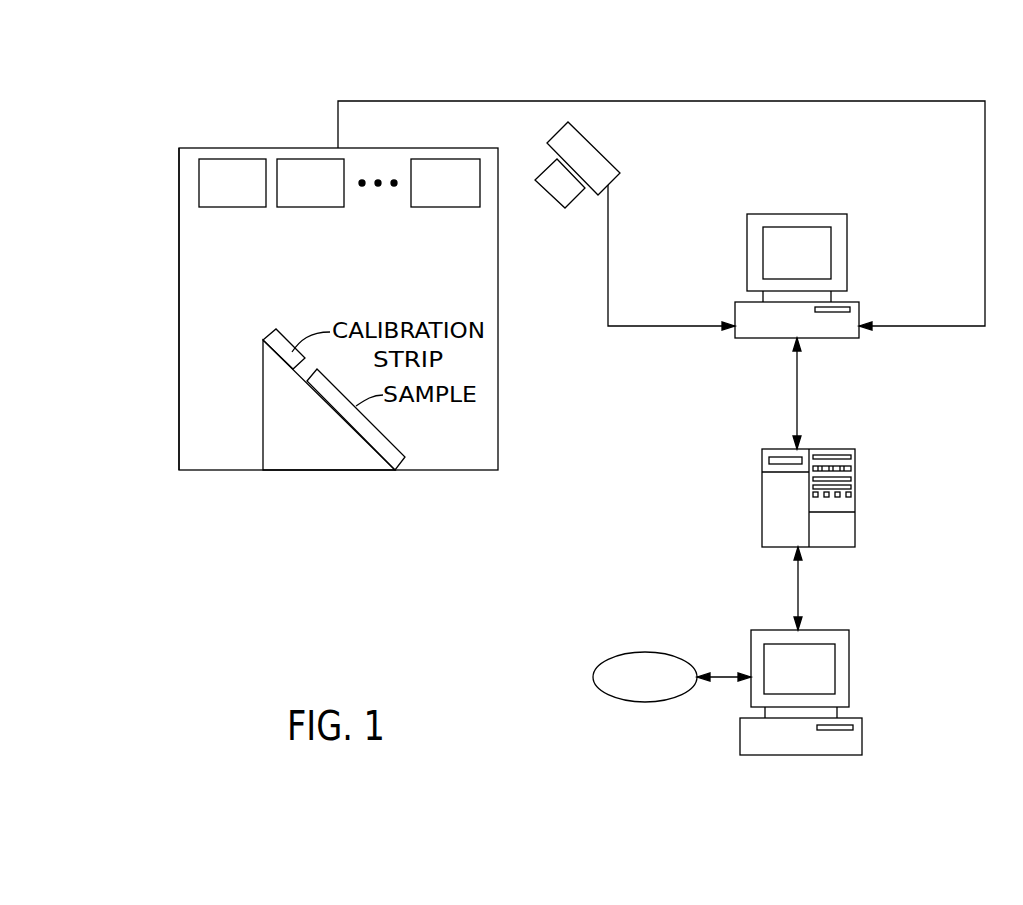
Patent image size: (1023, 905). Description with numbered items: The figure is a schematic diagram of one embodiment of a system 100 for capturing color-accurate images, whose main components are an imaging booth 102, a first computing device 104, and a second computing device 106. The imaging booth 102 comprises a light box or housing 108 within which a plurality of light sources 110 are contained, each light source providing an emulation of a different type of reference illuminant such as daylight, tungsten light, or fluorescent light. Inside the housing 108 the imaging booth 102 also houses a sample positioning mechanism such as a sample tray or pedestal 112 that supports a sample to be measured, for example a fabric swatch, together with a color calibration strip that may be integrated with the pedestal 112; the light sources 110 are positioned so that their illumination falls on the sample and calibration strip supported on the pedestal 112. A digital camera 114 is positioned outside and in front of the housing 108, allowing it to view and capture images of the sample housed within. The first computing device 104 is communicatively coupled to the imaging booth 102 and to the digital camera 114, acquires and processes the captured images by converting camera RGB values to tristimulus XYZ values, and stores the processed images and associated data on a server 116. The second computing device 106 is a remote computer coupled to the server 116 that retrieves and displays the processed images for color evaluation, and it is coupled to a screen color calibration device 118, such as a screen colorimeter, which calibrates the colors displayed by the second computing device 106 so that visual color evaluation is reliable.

The system 100 is at (163, 58).
The imaging booth 102 is at (348, 275).
The first computing device 104 is at (840, 338).
The second computing device 106 is at (845, 755).
The housing 108 is at (179, 340).
The light sources 110 is at (258, 192).
The pedestal 112 is at (263, 414).
The digital camera 114 is at (598, 148).
The server 116 is at (855, 528).
The screen color calibration device 118 is at (665, 687).